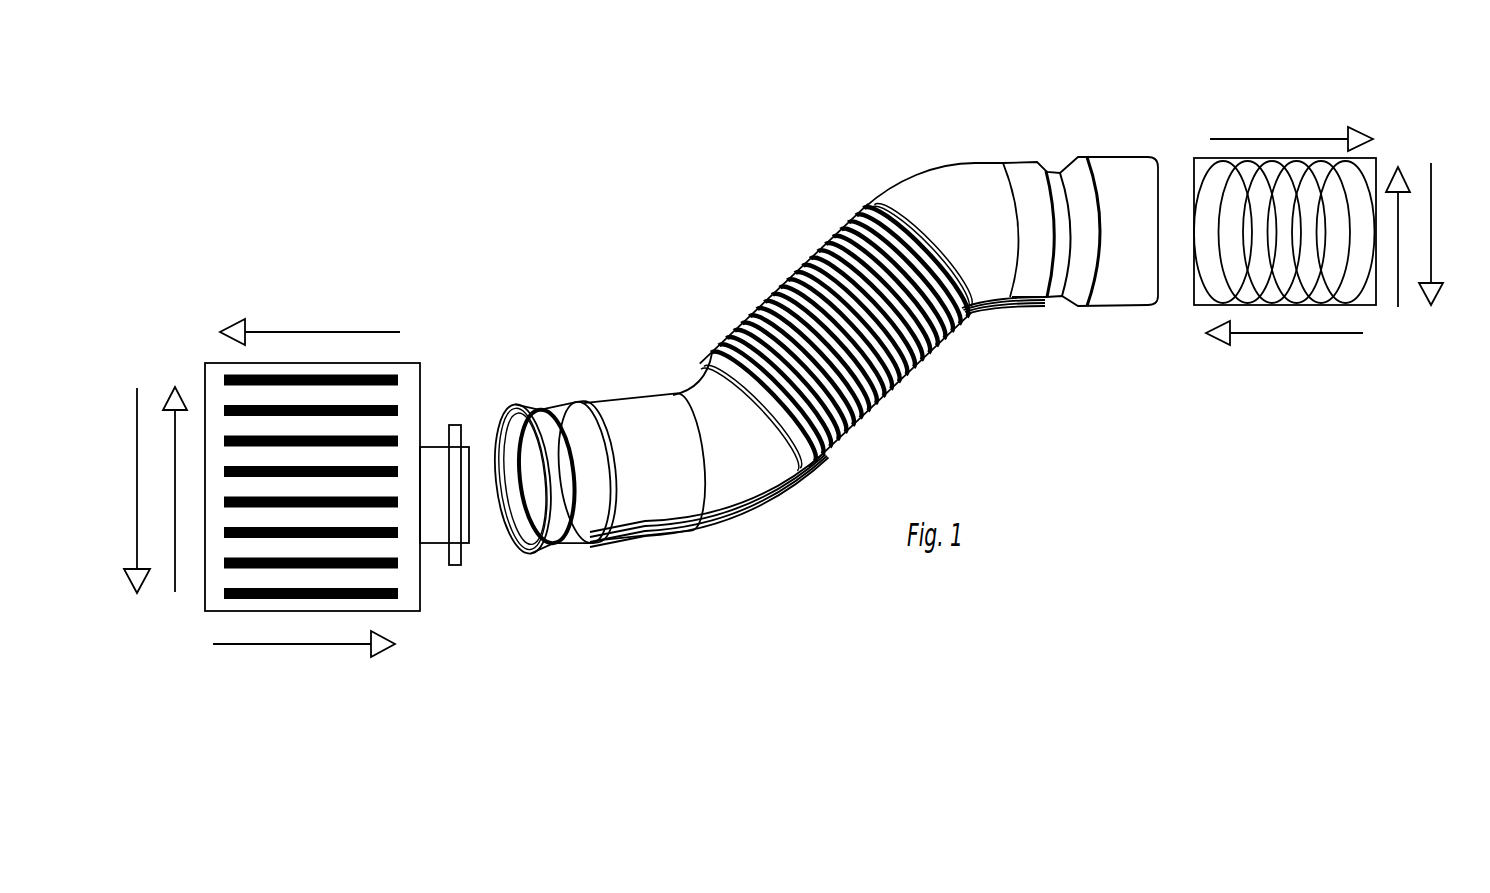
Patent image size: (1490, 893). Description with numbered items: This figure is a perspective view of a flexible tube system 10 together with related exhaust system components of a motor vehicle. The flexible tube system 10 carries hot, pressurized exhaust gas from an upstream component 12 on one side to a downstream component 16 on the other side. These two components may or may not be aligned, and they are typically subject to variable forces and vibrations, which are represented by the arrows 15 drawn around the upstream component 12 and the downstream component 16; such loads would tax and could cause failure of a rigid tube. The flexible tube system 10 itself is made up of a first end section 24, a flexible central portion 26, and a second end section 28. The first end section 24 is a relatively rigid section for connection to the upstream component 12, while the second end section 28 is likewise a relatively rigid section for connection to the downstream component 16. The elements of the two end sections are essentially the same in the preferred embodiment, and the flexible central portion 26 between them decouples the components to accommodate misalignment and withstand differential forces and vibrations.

The flexible tube system 10 is at (728, 237).
The upstream component 12 is at (423, 358).
The arrows 15 is at (278, 330).
The downstream component 16 is at (1196, 155).
The first end section 24 is at (613, 390).
The flexible central portion 26 is at (905, 398).
The second end section 28 is at (952, 160).